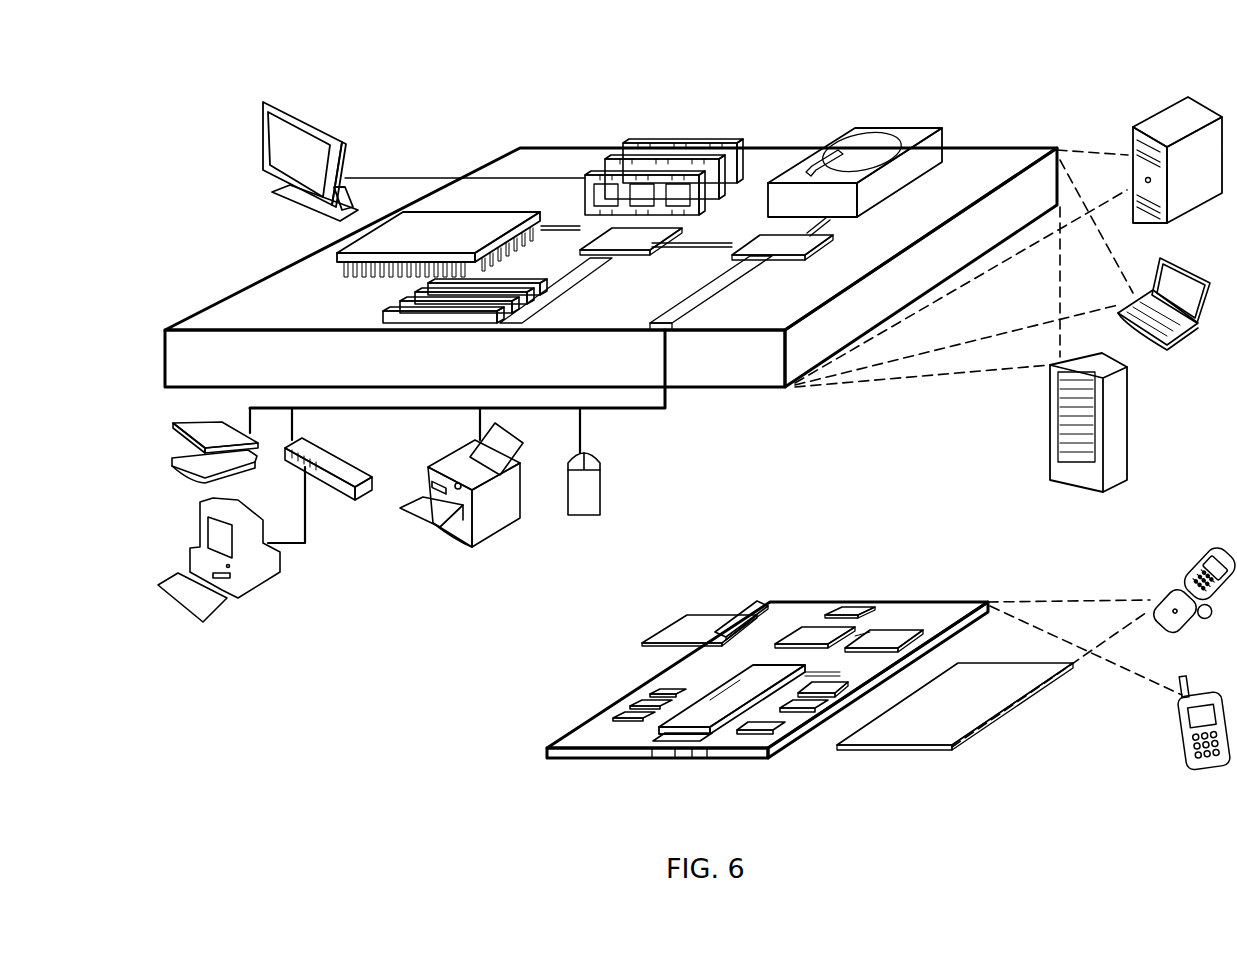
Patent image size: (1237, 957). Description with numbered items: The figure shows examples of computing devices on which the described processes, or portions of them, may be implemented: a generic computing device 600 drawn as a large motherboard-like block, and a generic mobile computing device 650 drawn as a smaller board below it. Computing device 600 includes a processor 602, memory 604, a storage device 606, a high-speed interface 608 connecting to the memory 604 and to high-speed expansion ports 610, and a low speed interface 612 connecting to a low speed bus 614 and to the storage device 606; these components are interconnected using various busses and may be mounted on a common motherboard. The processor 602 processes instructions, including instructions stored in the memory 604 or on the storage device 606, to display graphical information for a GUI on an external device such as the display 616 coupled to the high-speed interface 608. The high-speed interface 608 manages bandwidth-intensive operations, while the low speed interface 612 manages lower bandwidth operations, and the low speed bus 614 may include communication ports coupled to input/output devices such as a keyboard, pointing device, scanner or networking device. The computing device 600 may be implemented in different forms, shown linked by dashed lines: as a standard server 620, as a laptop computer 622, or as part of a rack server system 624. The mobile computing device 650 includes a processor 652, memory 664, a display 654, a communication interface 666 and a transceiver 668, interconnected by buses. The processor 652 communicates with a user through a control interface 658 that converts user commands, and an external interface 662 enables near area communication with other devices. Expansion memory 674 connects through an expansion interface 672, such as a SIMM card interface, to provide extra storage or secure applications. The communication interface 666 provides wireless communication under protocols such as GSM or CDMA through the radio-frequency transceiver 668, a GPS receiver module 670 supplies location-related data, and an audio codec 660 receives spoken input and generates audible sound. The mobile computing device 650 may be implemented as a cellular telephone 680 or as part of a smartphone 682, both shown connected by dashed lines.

The computing device 600 is at (452, 118).
The processor 602 is at (337, 258).
The memory 604 is at (634, 140).
The storage device 606 is at (848, 128).
The high-speed interface 608 is at (603, 237).
The high-speed expansion ports 610 is at (400, 302).
The low speed interface 612 is at (780, 243).
The low speed bus 614 is at (672, 330).
The display 616 is at (263, 108).
The standard server 620 is at (1132, 137).
The laptop computer 622 is at (1158, 263).
The rack server system 624 is at (1050, 445).
The mobile computing device 650 is at (748, 580).
The processor 652 is at (704, 740).
The display 654 is at (953, 750).
The control interface 658 is at (812, 716).
The audio codec 660 is at (825, 700).
The external interface 662 is at (680, 750).
The memory 664 is at (625, 716).
The communication interface 666 is at (812, 632).
The transceiver 668 is at (883, 637).
The GPS receiver module 670 is at (853, 612).
The expansion interface 672 is at (745, 613).
The expansion memory 674 is at (690, 617).
The cellular telephone 680 is at (1203, 553).
The smartphone 682 is at (1188, 678).